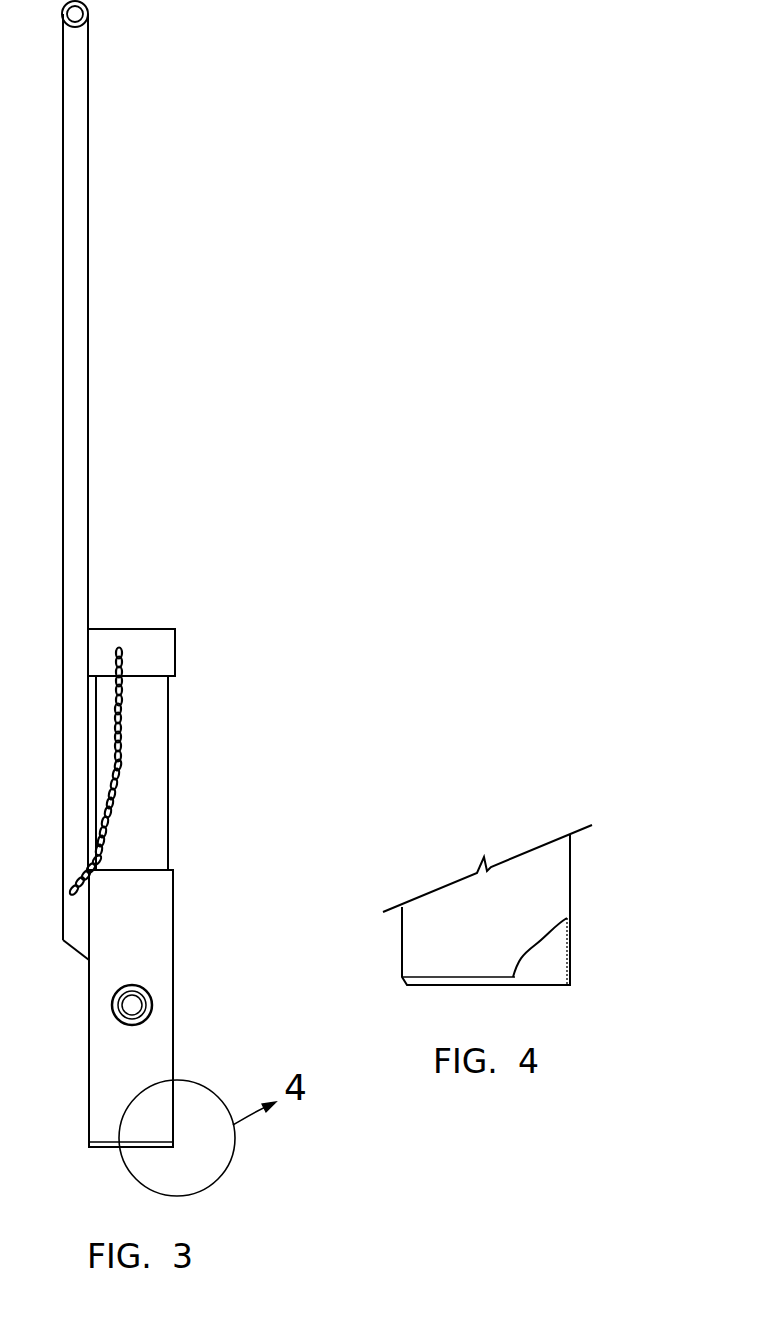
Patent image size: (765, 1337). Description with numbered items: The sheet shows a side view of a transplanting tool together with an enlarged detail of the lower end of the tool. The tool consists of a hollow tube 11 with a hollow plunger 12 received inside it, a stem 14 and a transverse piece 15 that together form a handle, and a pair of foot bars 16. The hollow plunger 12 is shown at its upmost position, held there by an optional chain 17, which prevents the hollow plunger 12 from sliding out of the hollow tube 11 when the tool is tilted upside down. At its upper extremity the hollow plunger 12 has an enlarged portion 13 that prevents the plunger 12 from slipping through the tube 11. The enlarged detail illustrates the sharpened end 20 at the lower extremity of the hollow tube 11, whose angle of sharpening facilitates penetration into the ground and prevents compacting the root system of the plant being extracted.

In FIG. 3, the hollow tube 11 is at (173, 927).
In FIG. 4, the hollow tube 11 is at (571, 877).
In FIG. 3, the hollow plunger 12 is at (170, 797).
In FIG. 3, the enlarged portion 13 is at (176, 650).
In FIG. 3, the stem 14 is at (89, 160).
In FIG. 3, the transverse piece 15 is at (86, 26).
In FIG. 3, the foot bar 16 is at (150, 993).
In FIG. 3, the chain 17 is at (121, 716).
In FIG. 4, the sharpened end 20 is at (569, 985).